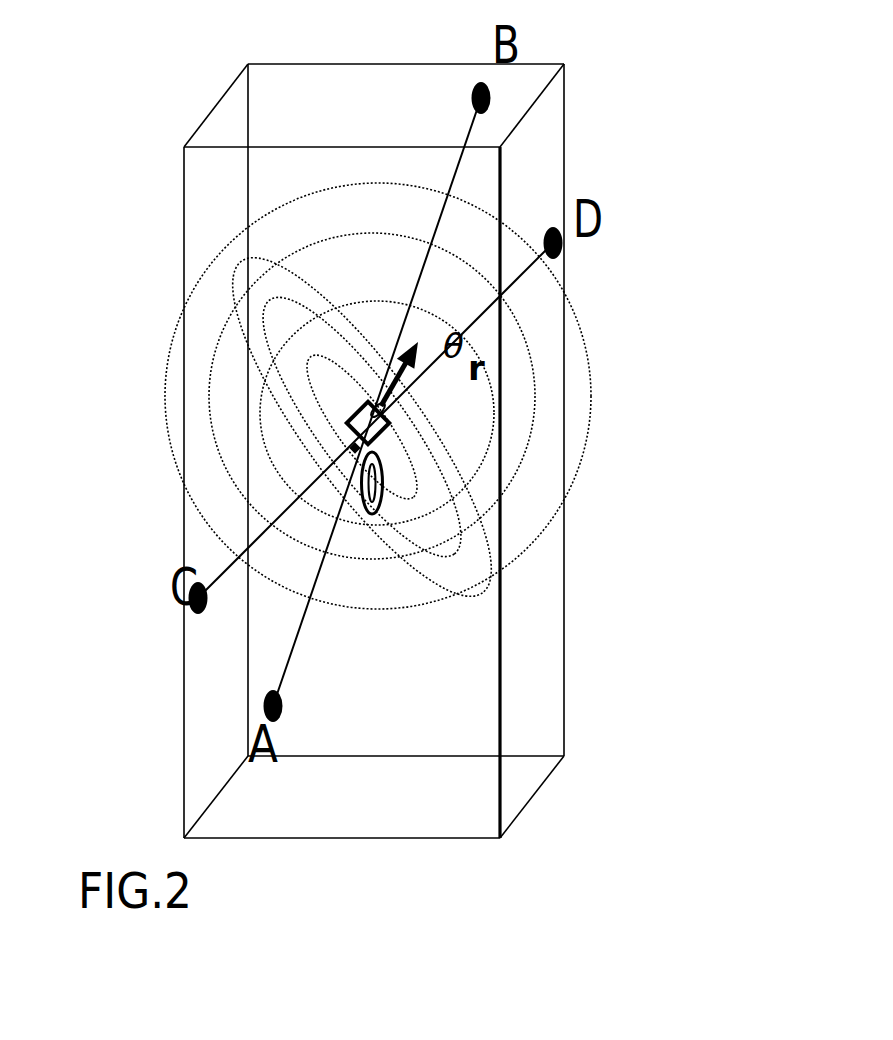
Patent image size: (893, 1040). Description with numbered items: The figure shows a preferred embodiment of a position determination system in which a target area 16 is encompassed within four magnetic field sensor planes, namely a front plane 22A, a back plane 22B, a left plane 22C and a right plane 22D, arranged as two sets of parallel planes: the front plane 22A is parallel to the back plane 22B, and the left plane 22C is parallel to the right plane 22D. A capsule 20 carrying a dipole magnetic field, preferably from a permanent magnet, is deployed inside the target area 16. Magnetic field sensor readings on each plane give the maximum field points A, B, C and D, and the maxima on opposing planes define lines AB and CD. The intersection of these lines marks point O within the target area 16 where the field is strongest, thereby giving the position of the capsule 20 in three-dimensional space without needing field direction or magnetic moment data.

The target area 16 is at (645, 652).
The capsule 20 is at (352, 403).
The front plane 22A is at (374, 792).
The back plane 22B is at (374, 78).
The left plane 22C is at (183, 451).
The right plane 22D is at (546, 451).